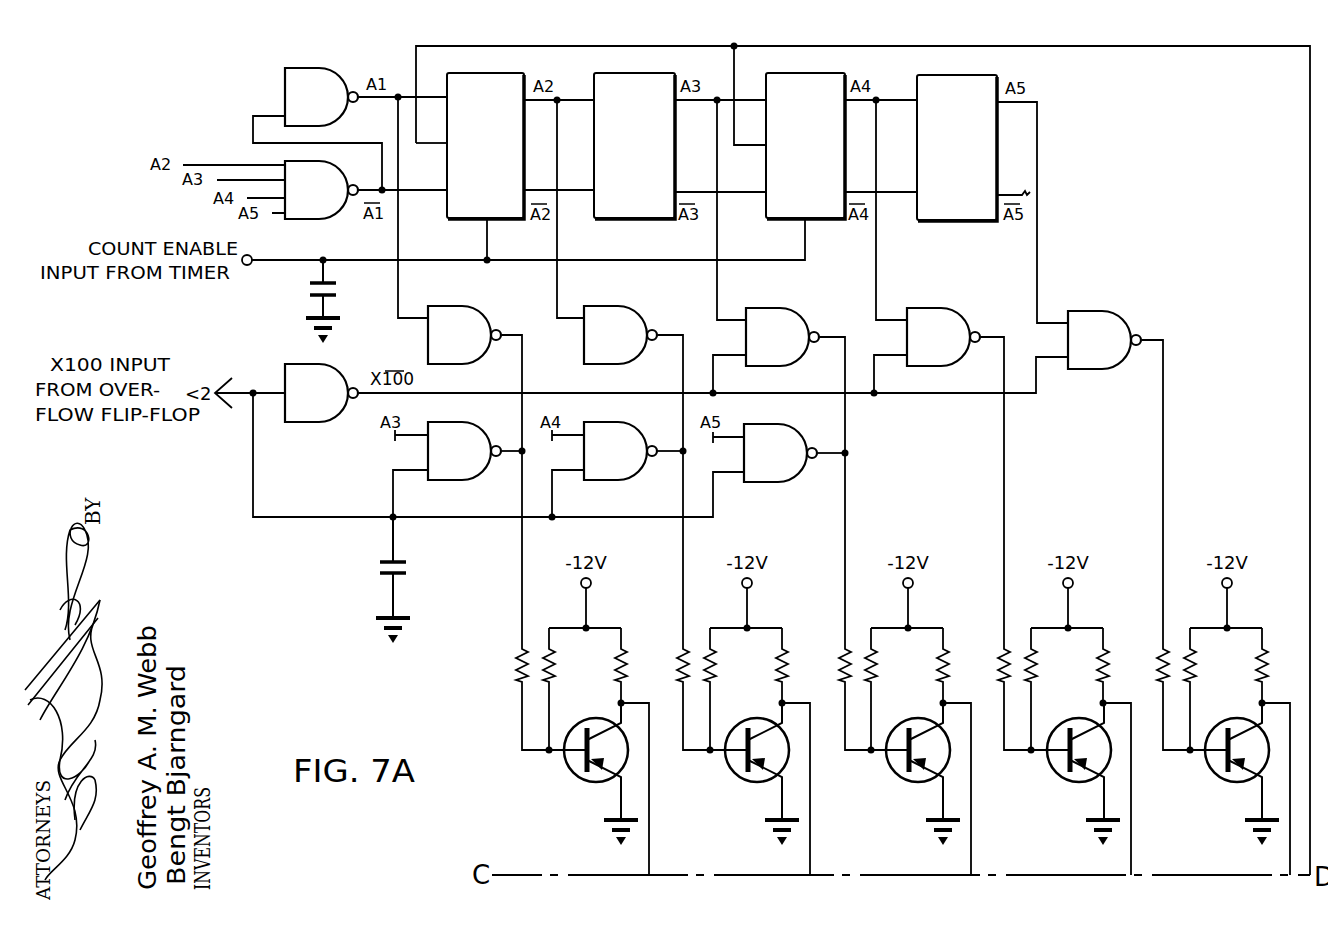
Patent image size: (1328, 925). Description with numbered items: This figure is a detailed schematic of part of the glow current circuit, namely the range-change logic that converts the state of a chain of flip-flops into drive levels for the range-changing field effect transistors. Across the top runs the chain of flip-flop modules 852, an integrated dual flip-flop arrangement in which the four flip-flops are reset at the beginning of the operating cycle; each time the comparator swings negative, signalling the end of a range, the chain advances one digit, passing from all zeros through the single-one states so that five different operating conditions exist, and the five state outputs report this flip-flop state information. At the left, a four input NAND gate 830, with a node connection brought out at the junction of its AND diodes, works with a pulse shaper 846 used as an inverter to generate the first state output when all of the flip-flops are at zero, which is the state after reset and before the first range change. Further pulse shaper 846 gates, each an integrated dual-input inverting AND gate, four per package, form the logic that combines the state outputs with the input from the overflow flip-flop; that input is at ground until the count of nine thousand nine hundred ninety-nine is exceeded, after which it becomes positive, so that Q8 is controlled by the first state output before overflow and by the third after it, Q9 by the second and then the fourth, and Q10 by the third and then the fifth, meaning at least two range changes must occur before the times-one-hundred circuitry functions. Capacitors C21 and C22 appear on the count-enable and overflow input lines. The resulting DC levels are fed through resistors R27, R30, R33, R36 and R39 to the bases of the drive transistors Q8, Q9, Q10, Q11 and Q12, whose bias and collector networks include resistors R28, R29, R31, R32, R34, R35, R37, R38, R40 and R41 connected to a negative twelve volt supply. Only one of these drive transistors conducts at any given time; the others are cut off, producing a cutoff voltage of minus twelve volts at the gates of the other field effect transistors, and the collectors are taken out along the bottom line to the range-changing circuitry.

The pulse shaper 846 is at (713, 275).
The four input NAND gate 830 is at (321, 190).
The flip-flop module 852 is at (722, 147).
The capacitor C21 is at (314, 293).
The capacitor C22 is at (381, 573).
The resistor R27 is at (518, 655).
The resistor R28 is at (569, 665).
The resistor R29 is at (624, 660).
The resistor R30 is at (680, 662).
The resistor R31 is at (713, 664).
The resistor R32 is at (779, 666).
The resistor R33 is at (842, 668).
The resistor R34 is at (874, 668).
The resistor R35 is at (941, 670).
The resistor R36 is at (1001, 669).
The resistor R37 is at (1034, 668).
The resistor R38 is at (1101, 670).
The resistor R39 is at (1160, 669).
The resistor R40 is at (1193, 671).
The resistor R41 is at (1265, 670).
The drive transistor Q8 is at (573, 774).
The drive transistor Q9 is at (733, 774).
The drive transistor Q10 is at (895, 774).
The drive transistor Q11 is at (1056, 774).
The drive transistor Q12 is at (1215, 774).